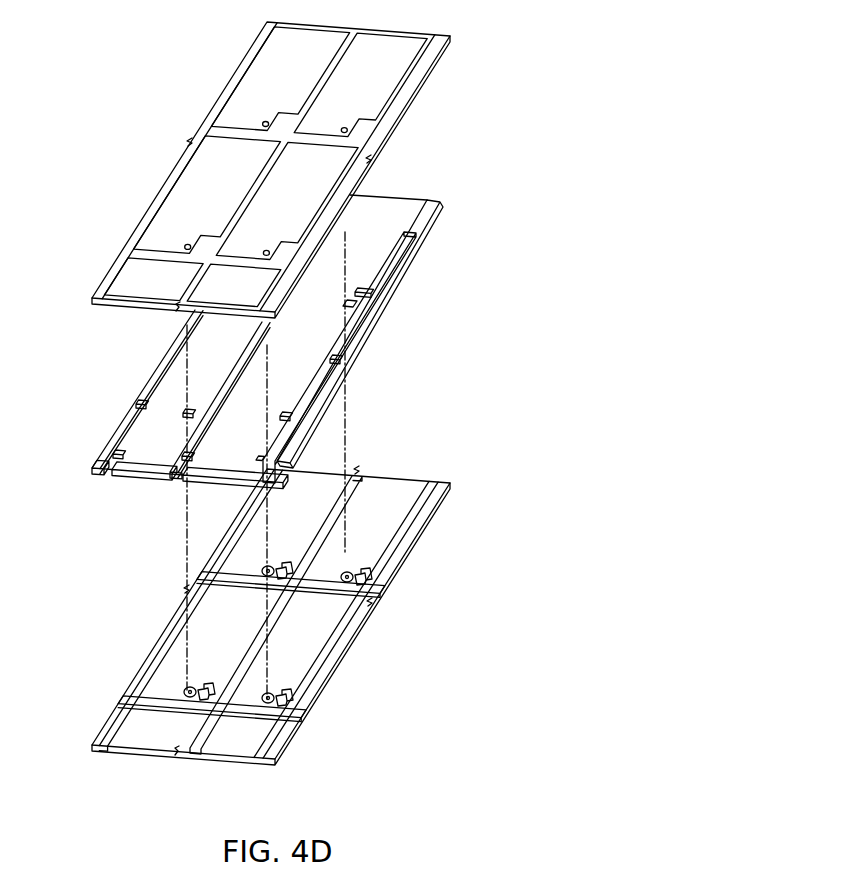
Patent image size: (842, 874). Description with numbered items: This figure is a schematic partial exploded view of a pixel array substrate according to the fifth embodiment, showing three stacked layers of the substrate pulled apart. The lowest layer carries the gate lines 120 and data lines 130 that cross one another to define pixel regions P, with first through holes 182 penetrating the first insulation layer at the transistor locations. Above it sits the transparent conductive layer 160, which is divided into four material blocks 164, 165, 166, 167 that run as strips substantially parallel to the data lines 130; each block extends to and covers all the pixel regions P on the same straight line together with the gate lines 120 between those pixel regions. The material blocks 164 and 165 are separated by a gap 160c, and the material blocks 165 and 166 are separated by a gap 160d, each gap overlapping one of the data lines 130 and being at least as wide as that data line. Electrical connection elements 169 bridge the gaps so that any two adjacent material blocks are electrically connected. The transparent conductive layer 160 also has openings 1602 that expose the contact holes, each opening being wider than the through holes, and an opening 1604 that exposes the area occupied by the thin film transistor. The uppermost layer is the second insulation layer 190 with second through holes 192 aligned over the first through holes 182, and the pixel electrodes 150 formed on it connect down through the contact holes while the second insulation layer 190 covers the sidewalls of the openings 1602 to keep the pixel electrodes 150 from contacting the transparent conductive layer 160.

The pixel electrode 150 is at (400, 70).
The second through hole 192 is at (356, 126).
The second insulation layer 190 is at (372, 172).
The transparent conductive layer 160 is at (255, 403).
The material block 164 is at (92, 473).
The material block 165 is at (137, 478).
The material block 166 is at (200, 458).
The material block 167 is at (217, 480).
The electrical connection element 169 is at (263, 458).
The gap 160c is at (113, 486).
The gap 160d is at (183, 486).
The opening 1602 is at (356, 293).
The opening 1604 is at (363, 311).
The pixel region P is at (394, 523).
The first through hole 182 is at (360, 577).
The gate line 120 is at (320, 594).
The data line 130 is at (163, 646).